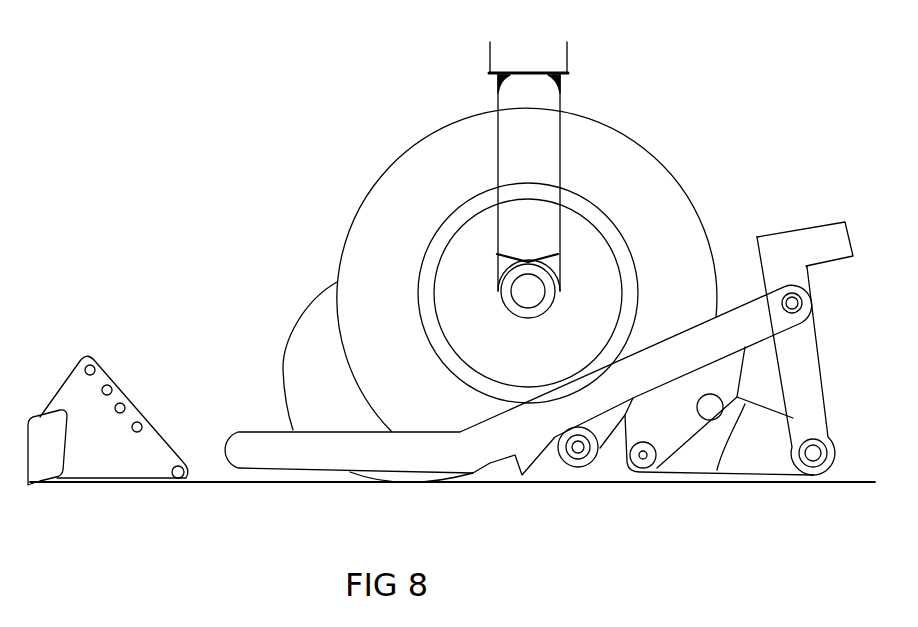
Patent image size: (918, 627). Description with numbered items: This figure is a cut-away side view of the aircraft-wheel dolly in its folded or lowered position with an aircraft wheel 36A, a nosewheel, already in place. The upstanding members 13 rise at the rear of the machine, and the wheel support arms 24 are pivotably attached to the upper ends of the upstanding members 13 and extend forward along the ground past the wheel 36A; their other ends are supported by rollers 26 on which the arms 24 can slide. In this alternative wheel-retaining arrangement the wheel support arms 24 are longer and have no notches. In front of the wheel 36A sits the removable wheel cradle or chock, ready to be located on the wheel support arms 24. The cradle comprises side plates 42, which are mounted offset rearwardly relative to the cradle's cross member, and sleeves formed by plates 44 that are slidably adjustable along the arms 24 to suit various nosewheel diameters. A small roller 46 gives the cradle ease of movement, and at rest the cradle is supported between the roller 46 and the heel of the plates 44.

The aircraft wheel 36A is at (655, 185).
The upstanding members 13 is at (805, 385).
The wheel support arms 24 is at (241, 432).
The rollers 26 is at (578, 452).
The side plates 42 is at (102, 417).
The plates 44 is at (42, 460).
The small roller 46 is at (190, 483).